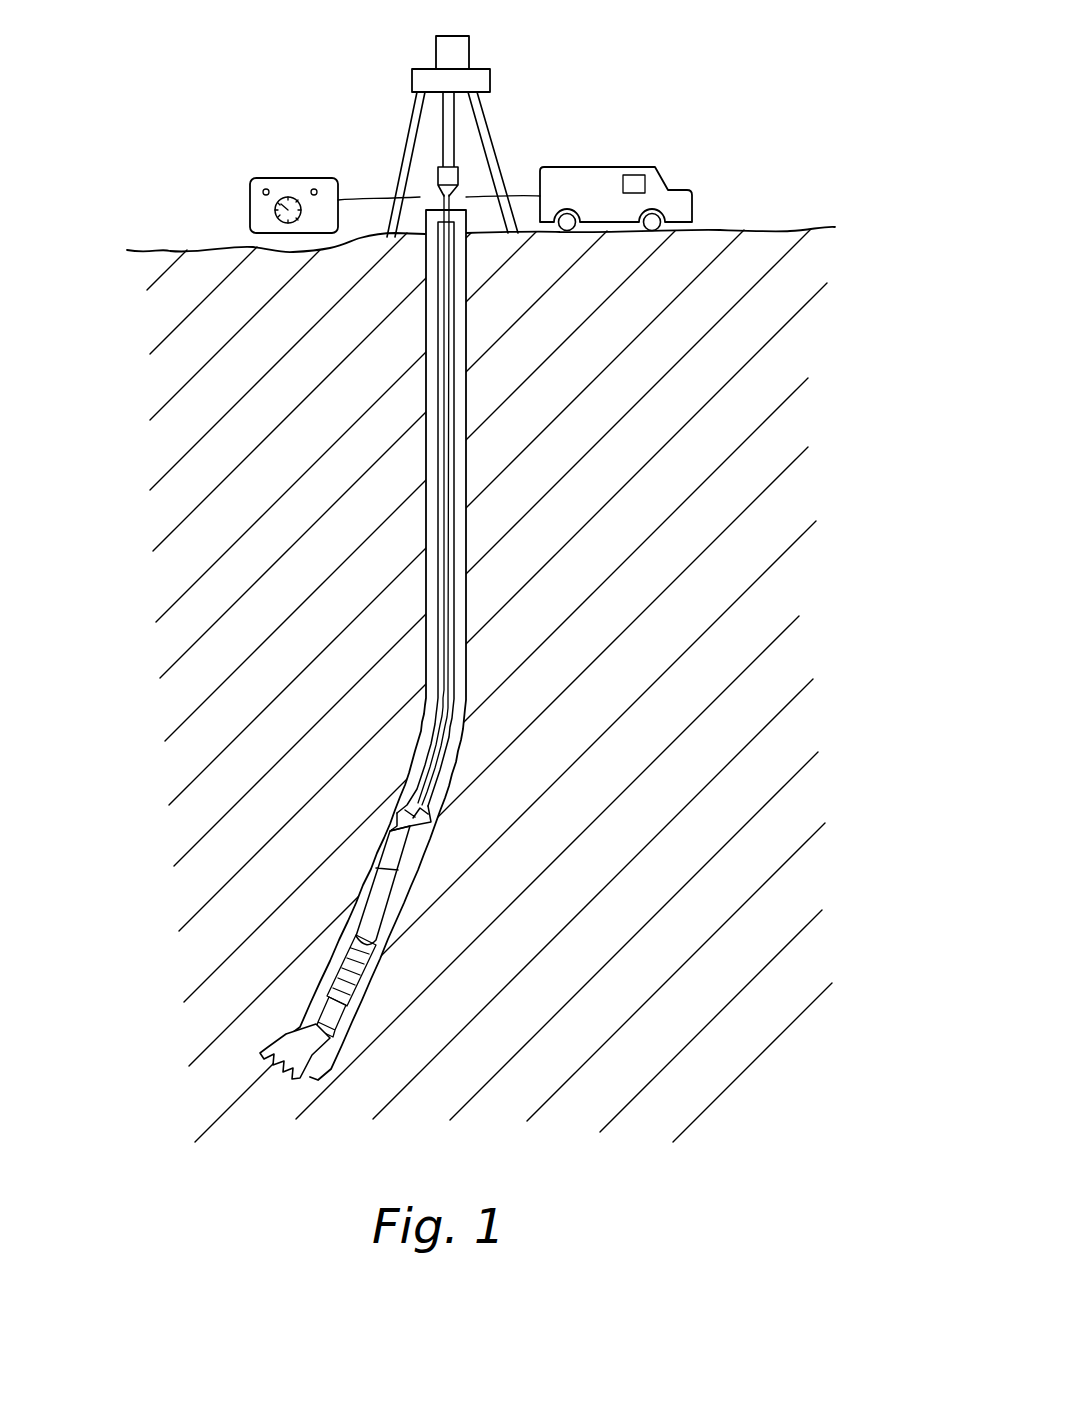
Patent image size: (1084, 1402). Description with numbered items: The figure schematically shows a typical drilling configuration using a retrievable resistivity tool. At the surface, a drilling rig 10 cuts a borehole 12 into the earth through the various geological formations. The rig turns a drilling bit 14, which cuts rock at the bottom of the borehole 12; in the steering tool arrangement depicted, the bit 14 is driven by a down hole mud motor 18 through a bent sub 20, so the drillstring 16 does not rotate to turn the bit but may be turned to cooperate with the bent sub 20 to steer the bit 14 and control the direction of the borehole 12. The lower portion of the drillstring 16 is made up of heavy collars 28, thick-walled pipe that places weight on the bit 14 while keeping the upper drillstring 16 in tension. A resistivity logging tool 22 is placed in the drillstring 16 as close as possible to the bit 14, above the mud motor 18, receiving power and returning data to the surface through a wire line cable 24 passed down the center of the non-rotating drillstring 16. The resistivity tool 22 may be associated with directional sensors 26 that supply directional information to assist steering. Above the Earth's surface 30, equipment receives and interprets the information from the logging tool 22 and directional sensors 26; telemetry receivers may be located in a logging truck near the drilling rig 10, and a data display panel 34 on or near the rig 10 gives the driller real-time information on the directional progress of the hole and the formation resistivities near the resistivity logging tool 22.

The drilling rig 10 is at (489, 122).
The borehole 12 is at (475, 592).
The drilling bit 14 is at (270, 1042).
The drillstring 16 is at (472, 540).
The down hole mud motor 18 is at (352, 972).
The bent sub 20 is at (350, 1005).
The resistivity logging tool 22 is at (600, 167).
The wire line cable 24 is at (448, 420).
The directional sensors 26 is at (398, 850).
The heavy collars 28 is at (370, 868).
The Earth's surface 30 is at (148, 251).
The data display panel 34 is at (247, 201).